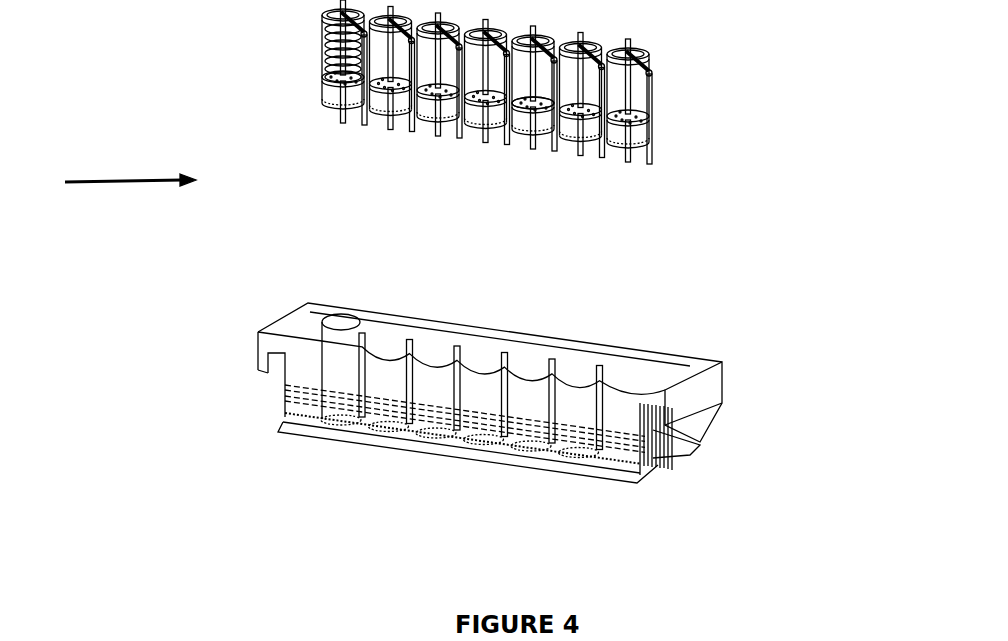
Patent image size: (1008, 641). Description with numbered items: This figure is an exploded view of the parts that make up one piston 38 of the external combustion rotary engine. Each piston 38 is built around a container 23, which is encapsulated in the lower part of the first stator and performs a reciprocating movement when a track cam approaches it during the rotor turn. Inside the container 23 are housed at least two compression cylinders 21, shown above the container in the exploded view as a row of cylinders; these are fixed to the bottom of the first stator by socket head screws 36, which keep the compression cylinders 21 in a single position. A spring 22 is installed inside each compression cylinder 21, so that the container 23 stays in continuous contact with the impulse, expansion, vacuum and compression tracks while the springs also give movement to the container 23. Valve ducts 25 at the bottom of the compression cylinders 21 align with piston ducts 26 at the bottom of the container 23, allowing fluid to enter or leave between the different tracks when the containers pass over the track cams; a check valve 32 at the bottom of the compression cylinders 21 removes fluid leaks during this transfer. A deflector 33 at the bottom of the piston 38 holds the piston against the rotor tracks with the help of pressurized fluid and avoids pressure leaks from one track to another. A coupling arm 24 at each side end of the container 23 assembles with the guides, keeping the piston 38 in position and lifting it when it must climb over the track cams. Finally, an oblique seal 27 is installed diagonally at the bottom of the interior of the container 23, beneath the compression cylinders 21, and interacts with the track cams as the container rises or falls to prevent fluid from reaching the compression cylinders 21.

The compression cylinders 21 is at (653, 90).
The springs 22 is at (325, 62).
The container 23 is at (312, 323).
The coupling arm 24 is at (262, 367).
The valve ducts 25 is at (385, 120).
The piston ducts 26 is at (388, 427).
The oblique seal 27 is at (655, 465).
The check valve 32 is at (542, 118).
The deflector 33 is at (560, 455).
The socket head screws 36 is at (365, 78).
The piston 38 is at (113, 183).